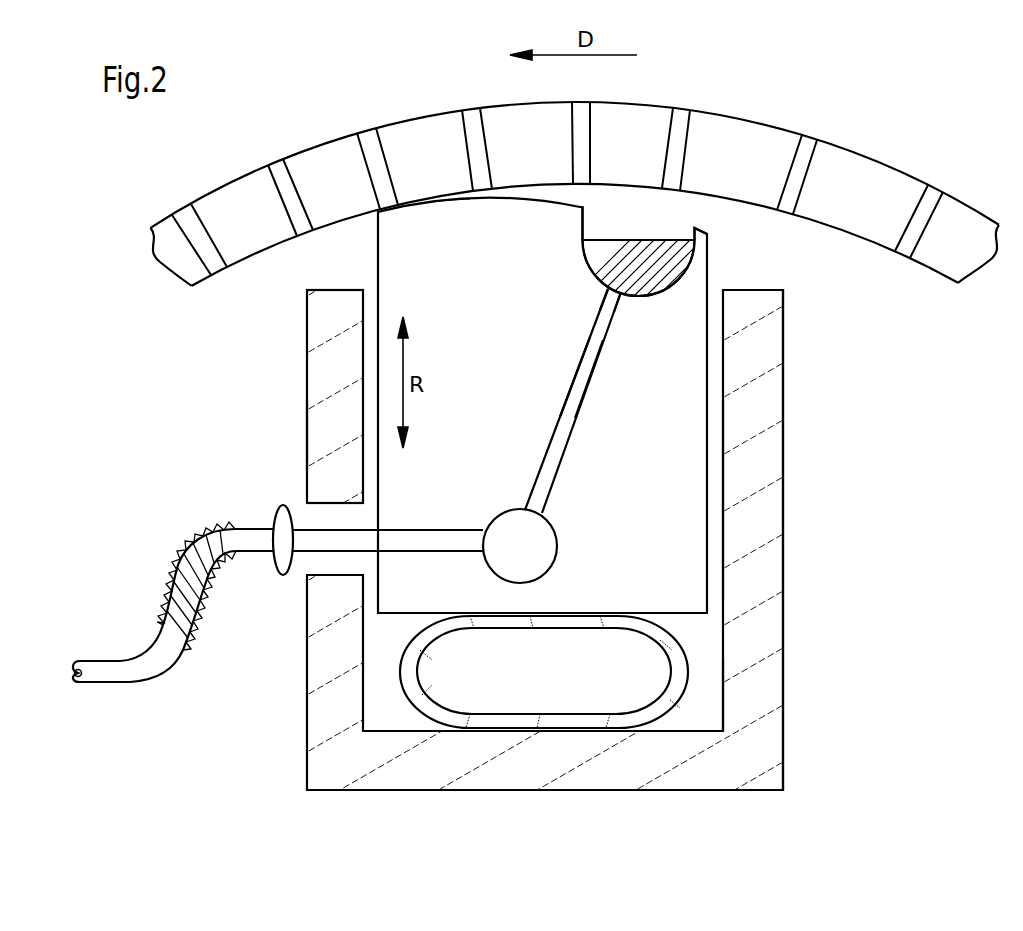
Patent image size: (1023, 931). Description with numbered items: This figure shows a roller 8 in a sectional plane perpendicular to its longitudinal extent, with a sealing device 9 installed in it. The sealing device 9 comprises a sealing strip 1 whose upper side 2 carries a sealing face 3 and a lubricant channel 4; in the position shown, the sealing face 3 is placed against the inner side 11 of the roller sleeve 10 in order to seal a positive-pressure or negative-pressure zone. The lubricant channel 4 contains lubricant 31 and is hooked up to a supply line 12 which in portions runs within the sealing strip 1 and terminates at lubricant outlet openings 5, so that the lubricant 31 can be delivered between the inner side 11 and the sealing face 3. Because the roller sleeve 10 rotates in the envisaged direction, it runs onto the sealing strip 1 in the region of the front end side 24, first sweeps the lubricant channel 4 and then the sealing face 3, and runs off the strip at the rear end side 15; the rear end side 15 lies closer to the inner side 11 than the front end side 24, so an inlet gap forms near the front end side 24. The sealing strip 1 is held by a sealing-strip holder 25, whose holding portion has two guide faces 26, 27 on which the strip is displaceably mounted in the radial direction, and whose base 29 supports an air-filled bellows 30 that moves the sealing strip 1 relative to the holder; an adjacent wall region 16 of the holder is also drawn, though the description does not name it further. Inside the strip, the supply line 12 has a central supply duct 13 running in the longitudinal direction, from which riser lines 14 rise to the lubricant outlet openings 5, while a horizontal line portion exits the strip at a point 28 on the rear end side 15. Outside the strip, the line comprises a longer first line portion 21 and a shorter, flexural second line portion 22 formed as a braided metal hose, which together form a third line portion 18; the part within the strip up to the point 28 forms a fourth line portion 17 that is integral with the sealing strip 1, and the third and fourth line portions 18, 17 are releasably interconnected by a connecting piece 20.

The sealing strip 1 is at (393, 258).
The upper side 2 is at (610, 200).
The sealing face 3 is at (443, 197).
The lubricant channel 4 is at (678, 233).
The lubricant outlet openings 5 is at (612, 297).
The roller 8 is at (982, 152).
The sealing device 9 is at (258, 792).
The roller sleeve 10 is at (865, 172).
The inner side 11 is at (927, 265).
The supply line 12 is at (600, 434).
The central supply duct 13 is at (531, 558).
The riser lines 14 is at (595, 343).
The rear end side 15 is at (378, 333).
The housing wall 16 is at (710, 537).
The fourth line portion 17 is at (391, 554).
The third line portion 18 is at (128, 625).
The connecting piece 20 is at (276, 505).
The first line portion 21 is at (143, 648).
The second line portion 22 is at (195, 535).
The front end side 24 is at (710, 340).
The sealing-strip holder 25 is at (757, 620).
The guide face 26 is at (363, 410).
The guide face 27 is at (723, 700).
The point 28 is at (378, 534).
The base 29 is at (664, 733).
The bellows 30 is at (613, 720).
The lubricant 31 is at (650, 278).